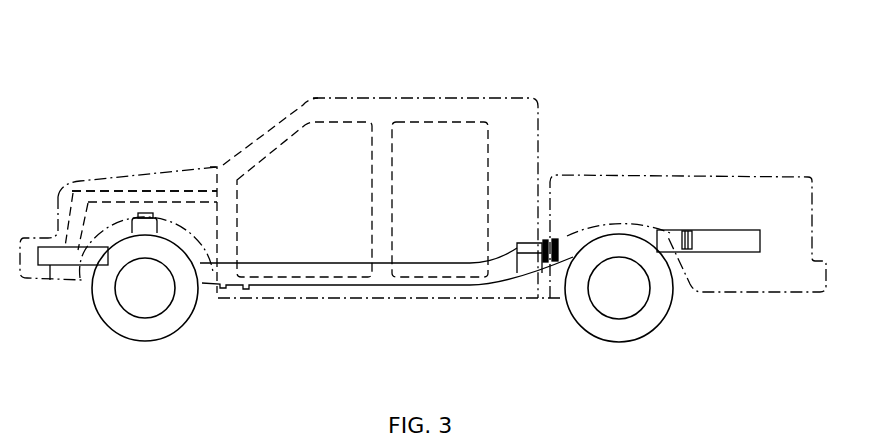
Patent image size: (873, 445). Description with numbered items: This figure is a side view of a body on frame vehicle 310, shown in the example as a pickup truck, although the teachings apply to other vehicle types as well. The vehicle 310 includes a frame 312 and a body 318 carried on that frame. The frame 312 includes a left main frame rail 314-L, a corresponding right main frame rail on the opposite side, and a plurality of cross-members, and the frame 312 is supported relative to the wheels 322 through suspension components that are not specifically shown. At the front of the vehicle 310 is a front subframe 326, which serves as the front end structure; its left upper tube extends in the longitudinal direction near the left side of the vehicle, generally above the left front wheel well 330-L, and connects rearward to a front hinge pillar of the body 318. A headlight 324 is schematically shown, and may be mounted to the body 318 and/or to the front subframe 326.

The body on frame vehicle 310 is at (110, 71).
The body 318 is at (506, 96).
The frame 312 is at (732, 226).
The wheels 322 is at (148, 320).
The left main frame rail 314-L is at (52, 258).
The headlight 324 is at (70, 190).
The left front wheel well 330-L is at (116, 218).
The front subframe 326 is at (178, 188).